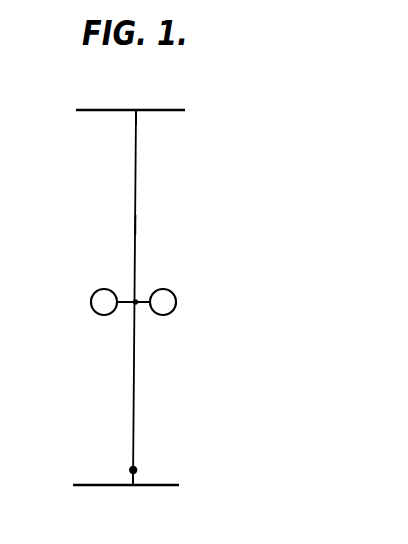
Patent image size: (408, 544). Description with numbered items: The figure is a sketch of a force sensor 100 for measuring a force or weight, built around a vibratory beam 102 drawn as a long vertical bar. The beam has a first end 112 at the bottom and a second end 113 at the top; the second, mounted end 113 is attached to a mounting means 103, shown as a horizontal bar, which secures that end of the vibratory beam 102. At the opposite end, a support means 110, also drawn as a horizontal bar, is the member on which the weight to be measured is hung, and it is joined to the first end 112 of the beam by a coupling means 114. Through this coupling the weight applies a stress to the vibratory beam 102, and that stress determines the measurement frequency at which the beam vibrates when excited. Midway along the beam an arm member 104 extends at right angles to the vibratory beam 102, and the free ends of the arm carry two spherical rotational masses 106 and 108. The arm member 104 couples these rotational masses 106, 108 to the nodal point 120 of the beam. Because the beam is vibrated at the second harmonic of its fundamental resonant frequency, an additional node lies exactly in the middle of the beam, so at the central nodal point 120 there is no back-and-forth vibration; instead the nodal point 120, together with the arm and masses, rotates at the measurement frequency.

The force sensor 100 is at (165, 226).
The vibratory beam 102 is at (135, 412).
The mounting means 103 is at (165, 112).
The arm member 104 is at (120, 308).
The spherical rotational mass 106 is at (95, 302).
The spherical rotational mass 108 is at (172, 306).
The support means 110 is at (88, 488).
The first end 112 is at (130, 466).
The second end 113 is at (134, 112).
The coupling means 114 is at (135, 478).
The nodal point 120 is at (136, 301).